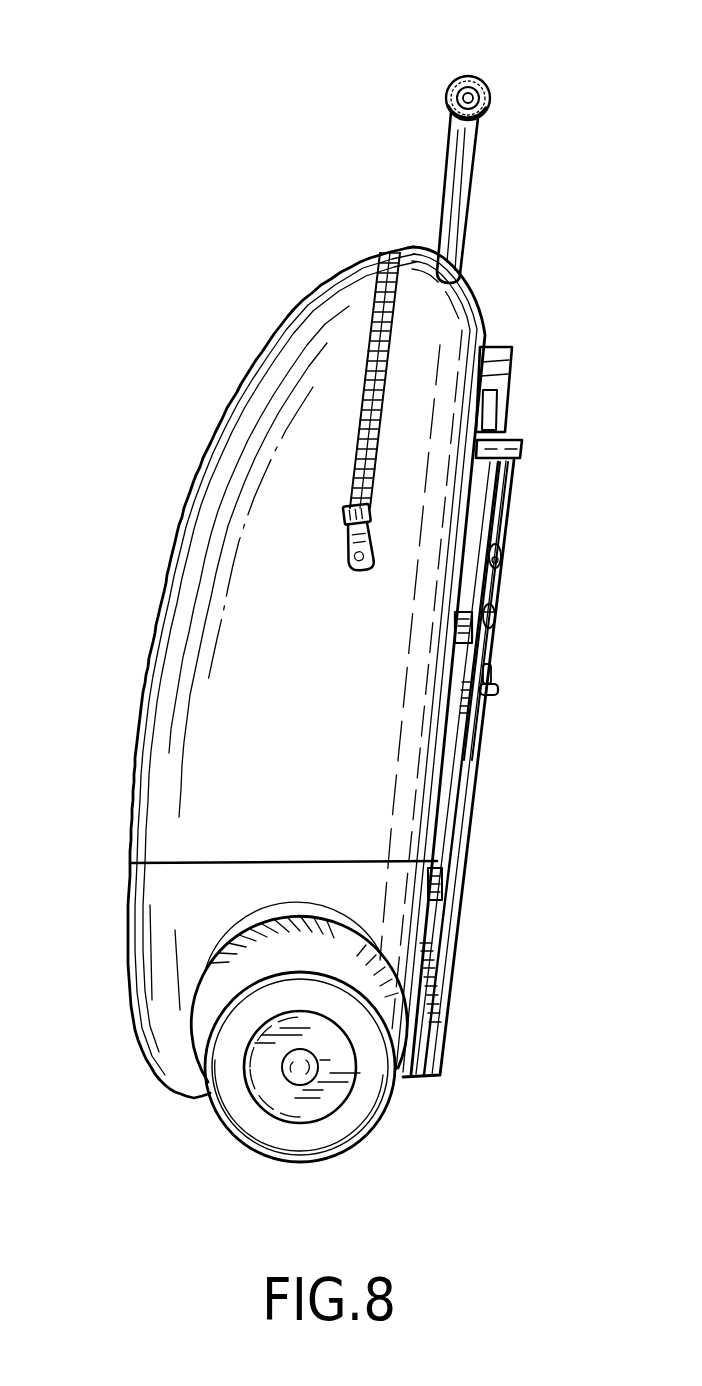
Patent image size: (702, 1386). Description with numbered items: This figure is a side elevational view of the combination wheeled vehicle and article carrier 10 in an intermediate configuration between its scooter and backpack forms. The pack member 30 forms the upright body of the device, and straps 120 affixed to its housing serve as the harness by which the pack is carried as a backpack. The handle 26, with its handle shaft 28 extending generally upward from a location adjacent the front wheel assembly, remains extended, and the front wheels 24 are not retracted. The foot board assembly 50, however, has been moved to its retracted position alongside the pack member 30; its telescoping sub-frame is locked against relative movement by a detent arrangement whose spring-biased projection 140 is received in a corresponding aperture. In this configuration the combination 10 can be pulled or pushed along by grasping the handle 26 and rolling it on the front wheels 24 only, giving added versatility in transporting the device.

The combination wheeled vehicle and article carrier 10 is at (230, 395).
The wheels 24 is at (242, 1122).
The handle 26 is at (492, 78).
The handle shaft 28 is at (476, 178).
The pack member 30 is at (193, 743).
The foot board assembly 50 is at (487, 751).
The straps 120 is at (479, 512).
The spring-biased projection 140 is at (491, 689).